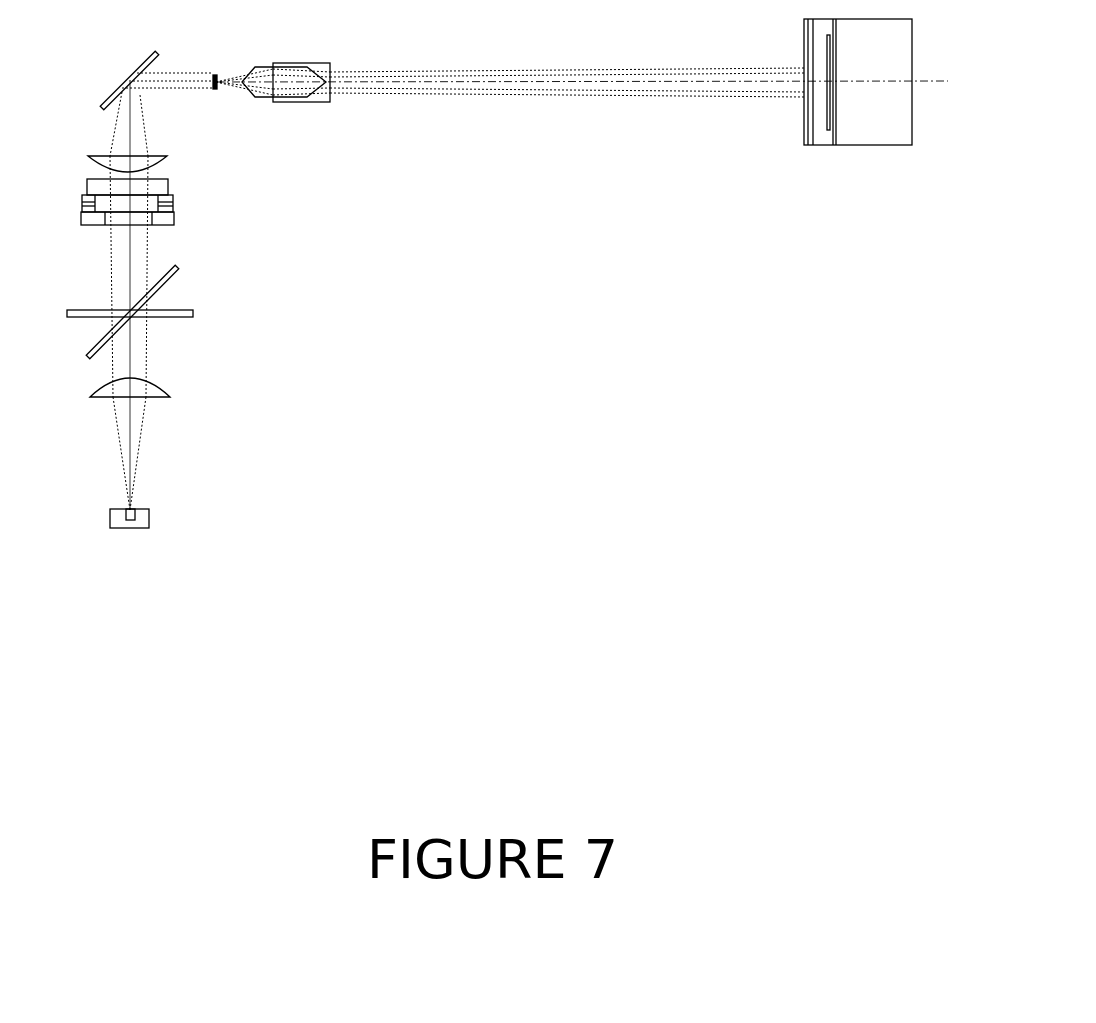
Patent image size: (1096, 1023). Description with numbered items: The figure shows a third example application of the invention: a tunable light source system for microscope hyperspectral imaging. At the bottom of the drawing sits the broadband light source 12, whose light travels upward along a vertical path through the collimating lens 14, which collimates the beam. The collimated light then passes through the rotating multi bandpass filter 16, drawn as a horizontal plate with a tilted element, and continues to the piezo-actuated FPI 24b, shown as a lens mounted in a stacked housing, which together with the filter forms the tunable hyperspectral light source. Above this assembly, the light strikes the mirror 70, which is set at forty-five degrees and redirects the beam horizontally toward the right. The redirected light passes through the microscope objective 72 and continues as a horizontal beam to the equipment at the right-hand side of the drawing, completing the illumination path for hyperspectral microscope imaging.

The mirror 70 is at (118, 88).
The microscope objective 72 is at (283, 62).
The piezo-actuated FPI 24b is at (170, 183).
The rotating multi bandpass filter 16 is at (195, 313).
The collimating lens 14 is at (172, 397).
The broadband light source 12 is at (140, 528).